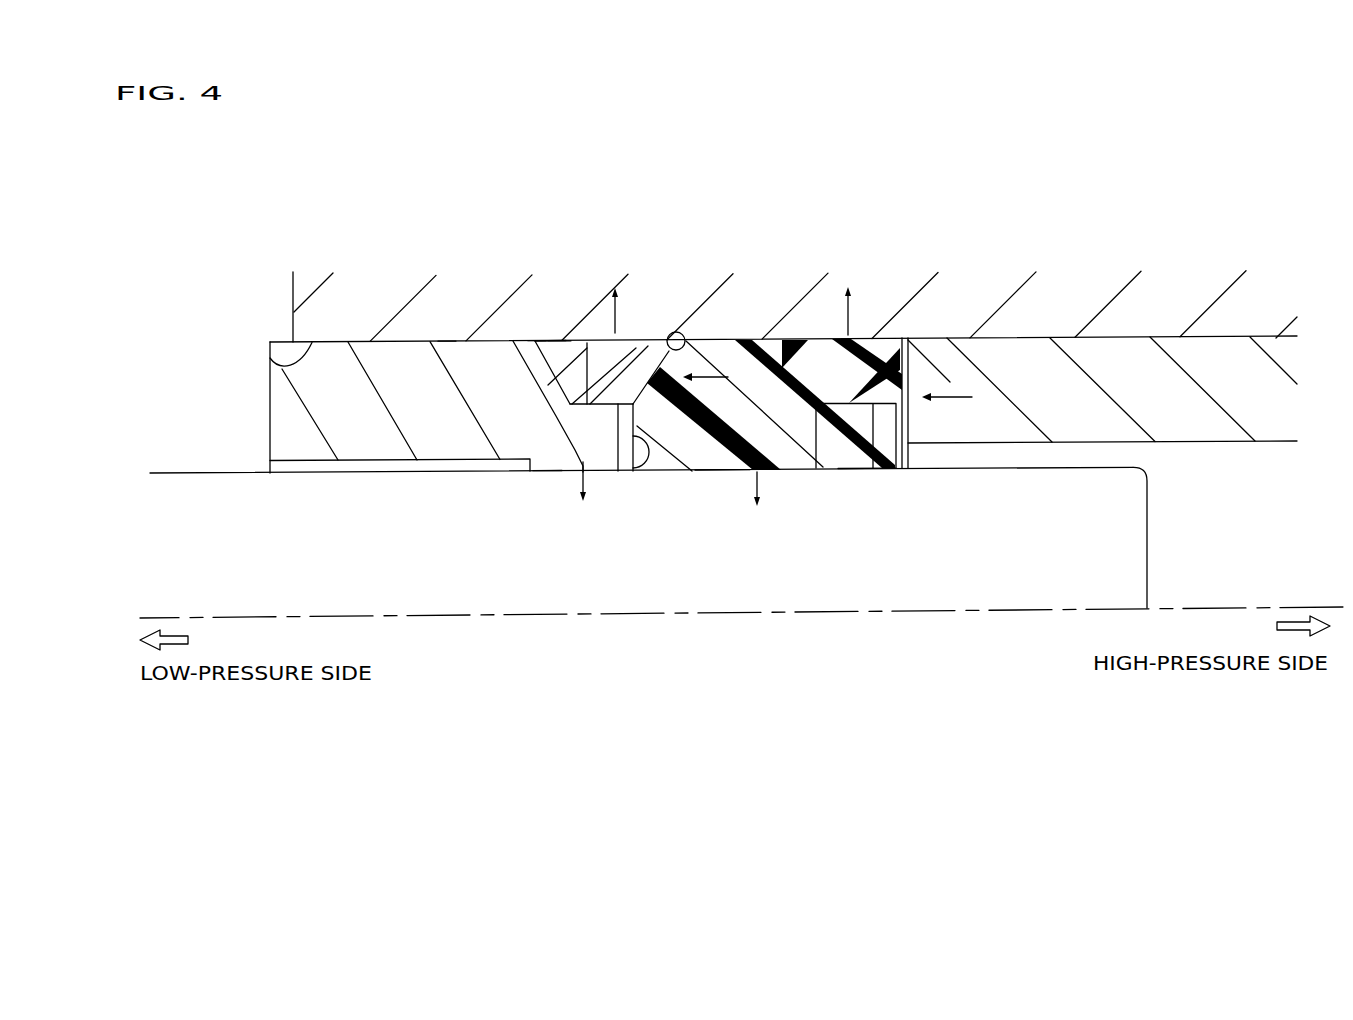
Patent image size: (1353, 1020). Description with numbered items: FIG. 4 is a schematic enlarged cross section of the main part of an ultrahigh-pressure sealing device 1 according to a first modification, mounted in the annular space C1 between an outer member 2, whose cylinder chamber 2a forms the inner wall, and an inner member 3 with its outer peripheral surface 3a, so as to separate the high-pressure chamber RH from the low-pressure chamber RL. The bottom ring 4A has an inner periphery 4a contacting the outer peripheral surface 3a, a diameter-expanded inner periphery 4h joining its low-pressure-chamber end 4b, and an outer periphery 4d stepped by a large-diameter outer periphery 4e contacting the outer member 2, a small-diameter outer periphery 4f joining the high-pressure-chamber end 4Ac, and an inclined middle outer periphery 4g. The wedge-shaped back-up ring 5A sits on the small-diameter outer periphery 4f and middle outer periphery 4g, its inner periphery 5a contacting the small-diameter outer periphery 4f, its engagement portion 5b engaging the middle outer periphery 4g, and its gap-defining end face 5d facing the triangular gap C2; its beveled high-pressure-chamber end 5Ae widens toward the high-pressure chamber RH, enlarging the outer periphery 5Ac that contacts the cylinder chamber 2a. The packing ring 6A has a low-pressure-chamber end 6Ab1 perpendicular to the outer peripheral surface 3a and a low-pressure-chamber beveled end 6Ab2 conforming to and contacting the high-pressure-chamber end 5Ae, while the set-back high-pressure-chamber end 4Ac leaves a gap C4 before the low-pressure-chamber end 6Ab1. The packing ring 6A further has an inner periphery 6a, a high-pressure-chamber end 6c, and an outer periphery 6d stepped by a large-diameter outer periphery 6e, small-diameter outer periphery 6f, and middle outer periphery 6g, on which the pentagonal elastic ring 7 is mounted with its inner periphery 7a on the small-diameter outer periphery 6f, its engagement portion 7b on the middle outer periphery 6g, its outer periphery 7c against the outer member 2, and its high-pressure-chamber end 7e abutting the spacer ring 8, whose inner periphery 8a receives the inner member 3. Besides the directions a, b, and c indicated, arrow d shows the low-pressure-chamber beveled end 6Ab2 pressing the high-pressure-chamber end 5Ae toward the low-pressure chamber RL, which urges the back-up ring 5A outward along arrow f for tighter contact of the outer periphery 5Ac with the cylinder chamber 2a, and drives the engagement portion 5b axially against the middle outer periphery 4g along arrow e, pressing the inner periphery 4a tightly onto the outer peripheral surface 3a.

The ultrahigh-pressure sealing device 1 is at (1090, 207).
The outer member 2 is at (290, 293).
The cylinder chamber 2a is at (268, 358).
The inner member 3 is at (1148, 520).
The outer peripheral surface of shaft 3a is at (171, 472).
The bottom ring 4A is at (357, 327).
The inner periphery 4a is at (546, 474).
The low-pressure-chamber end 4b is at (268, 396).
The outer periphery 4d is at (550, 221).
The large-diameter outer periphery 4e is at (448, 338).
The small-diameter outer periphery 4f is at (557, 338).
The middle outer periphery 4g is at (537, 338).
The diameter-expanded inner periphery 4h is at (388, 474).
The high-pressure-chamber end 4Ac is at (647, 474).
The back-up ring 5A is at (597, 340).
The outer periphery 5Ac is at (571, 338).
The high-pressure-chamber end 5Ae is at (683, 334).
The inner periphery 5a is at (606, 407).
The engagement portion 5b is at (566, 435).
The gap-defining end face 5d is at (556, 399).
The gap C2 is at (562, 341).
The packing ring 6A is at (713, 326).
The low-pressure-chamber end 6Ab1 is at (620, 474).
The low-pressure-chamber beveled end 6Ab2 is at (637, 336).
The gap C4 is at (631, 427).
The inner periphery 6a is at (723, 473).
The high-pressure-chamber end 6c is at (915, 467).
The outer periphery 6d is at (837, 221).
The large-diameter outer periphery 6e is at (760, 336).
The small-diameter outer periphery 6f is at (836, 336).
The middle outer periphery 6g is at (767, 334).
The elastic ring 7 is at (883, 336).
The inner periphery 7a is at (857, 470).
The engagement portion 7b is at (823, 470).
The outer periphery 7c is at (897, 336).
The high-pressure-chamber end 7e is at (909, 374).
The spacer ring 8 is at (1223, 410).
The inner periphery 8a is at (910, 417).
The annular space C1 is at (1072, 453).
The low-pressure chamber RL is at (200, 415).
The high-pressure chamber RH is at (1200, 570).
The direction a is at (954, 396).
The direction b is at (758, 504).
The direction c is at (848, 297).
The arrow d is at (705, 385).
The arrow e is at (583, 496).
The arrow f is at (614, 296).